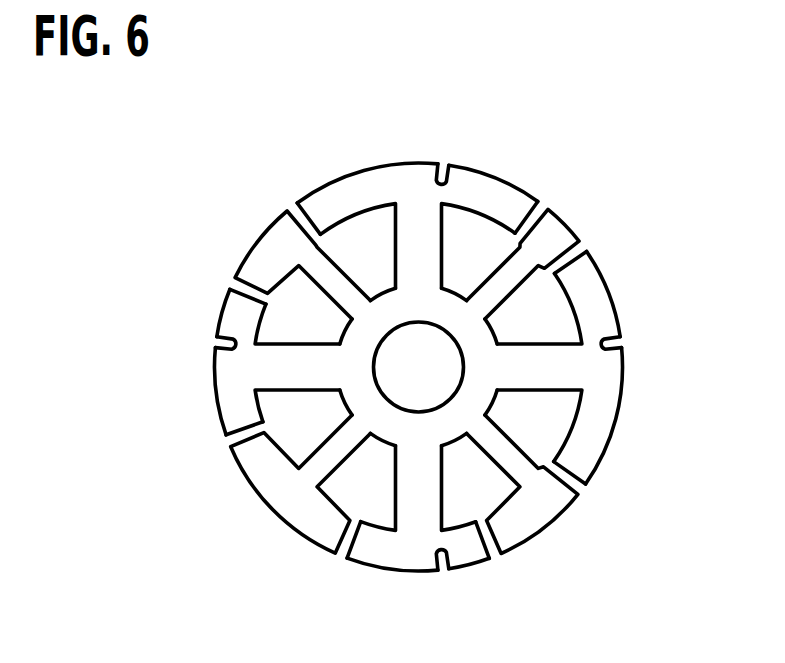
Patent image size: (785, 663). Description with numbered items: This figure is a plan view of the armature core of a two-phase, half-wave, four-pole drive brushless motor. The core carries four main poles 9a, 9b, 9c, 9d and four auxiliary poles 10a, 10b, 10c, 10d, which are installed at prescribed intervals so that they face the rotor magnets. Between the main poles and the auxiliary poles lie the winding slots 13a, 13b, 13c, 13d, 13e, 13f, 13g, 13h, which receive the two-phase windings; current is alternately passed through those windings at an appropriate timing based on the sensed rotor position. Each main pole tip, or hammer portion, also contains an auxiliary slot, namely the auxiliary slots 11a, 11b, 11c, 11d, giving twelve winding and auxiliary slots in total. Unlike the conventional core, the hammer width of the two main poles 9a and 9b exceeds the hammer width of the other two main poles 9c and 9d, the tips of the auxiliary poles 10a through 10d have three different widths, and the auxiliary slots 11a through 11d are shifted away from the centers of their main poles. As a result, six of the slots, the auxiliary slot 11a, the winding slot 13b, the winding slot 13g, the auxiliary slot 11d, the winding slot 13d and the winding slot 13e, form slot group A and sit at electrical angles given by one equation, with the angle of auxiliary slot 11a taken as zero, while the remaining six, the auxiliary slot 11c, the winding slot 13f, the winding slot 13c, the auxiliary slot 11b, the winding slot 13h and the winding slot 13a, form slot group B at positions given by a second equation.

The main pole 9a is at (600, 410).
The main pole 9b is at (363, 188).
The main pole 9c is at (229, 386).
The main pole 9d is at (392, 553).
The auxiliary pole 10a is at (536, 517).
The auxiliary pole 10b is at (560, 235).
The auxiliary pole 10c is at (268, 250).
The auxiliary pole 10d is at (282, 500).
The auxiliary slot 11a is at (619, 344).
The auxiliary slot 11b is at (446, 161).
The auxiliary slot 11c is at (217, 341).
The auxiliary slot 11d is at (444, 573).
The winding slot 13a is at (582, 491).
The winding slot 13b is at (581, 249).
The winding slot 13c is at (539, 205).
The winding slot 13d is at (289, 205).
The winding slot 13e is at (227, 287).
The winding slot 13f is at (228, 443).
The winding slot 13g is at (338, 556).
The winding slot 13h is at (496, 559).